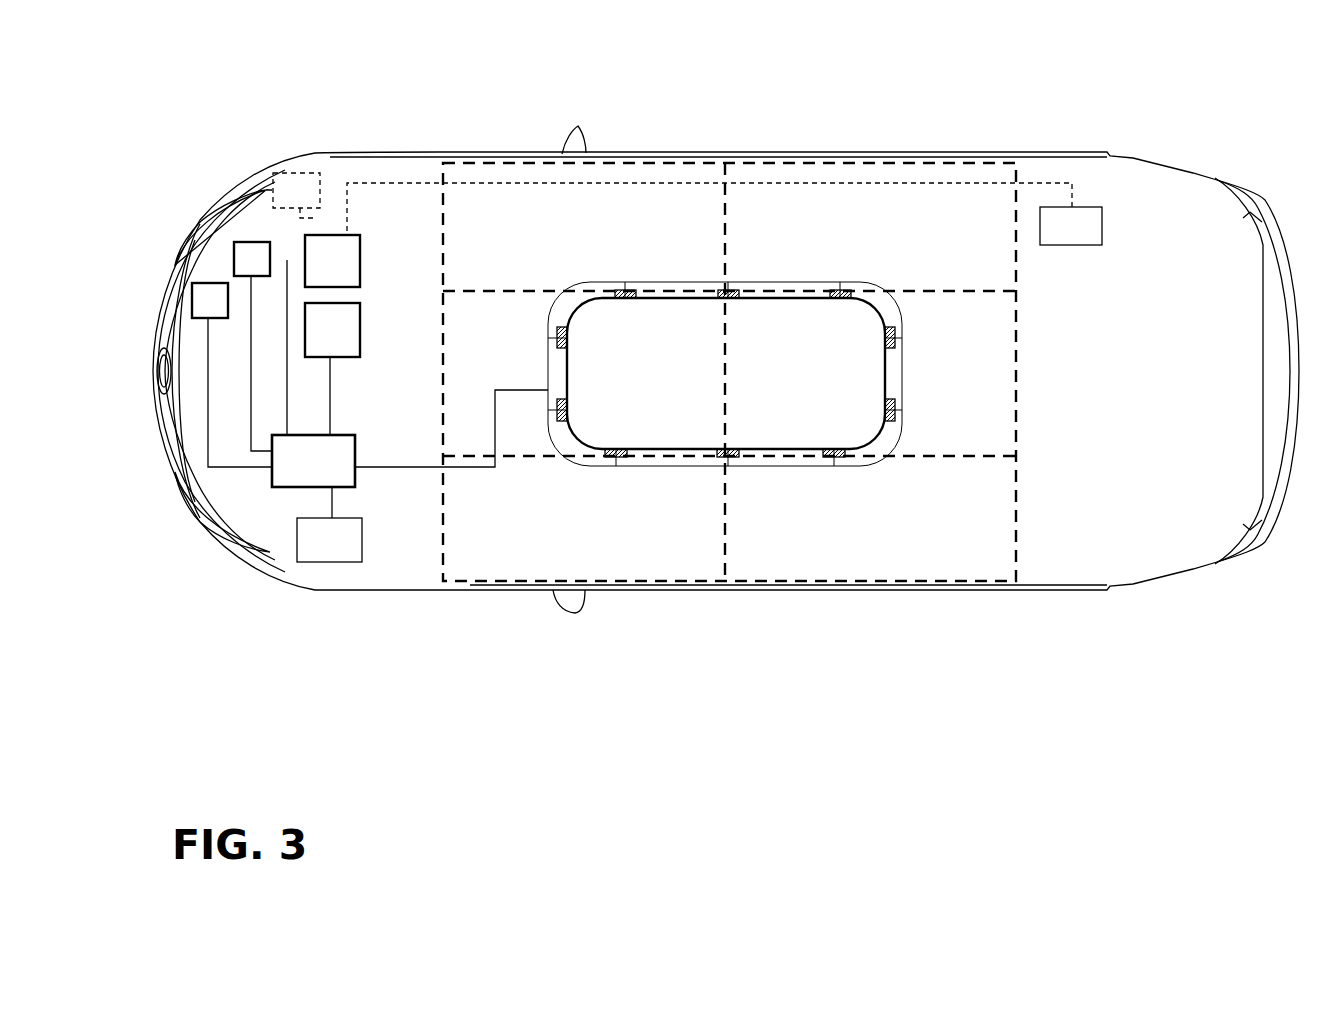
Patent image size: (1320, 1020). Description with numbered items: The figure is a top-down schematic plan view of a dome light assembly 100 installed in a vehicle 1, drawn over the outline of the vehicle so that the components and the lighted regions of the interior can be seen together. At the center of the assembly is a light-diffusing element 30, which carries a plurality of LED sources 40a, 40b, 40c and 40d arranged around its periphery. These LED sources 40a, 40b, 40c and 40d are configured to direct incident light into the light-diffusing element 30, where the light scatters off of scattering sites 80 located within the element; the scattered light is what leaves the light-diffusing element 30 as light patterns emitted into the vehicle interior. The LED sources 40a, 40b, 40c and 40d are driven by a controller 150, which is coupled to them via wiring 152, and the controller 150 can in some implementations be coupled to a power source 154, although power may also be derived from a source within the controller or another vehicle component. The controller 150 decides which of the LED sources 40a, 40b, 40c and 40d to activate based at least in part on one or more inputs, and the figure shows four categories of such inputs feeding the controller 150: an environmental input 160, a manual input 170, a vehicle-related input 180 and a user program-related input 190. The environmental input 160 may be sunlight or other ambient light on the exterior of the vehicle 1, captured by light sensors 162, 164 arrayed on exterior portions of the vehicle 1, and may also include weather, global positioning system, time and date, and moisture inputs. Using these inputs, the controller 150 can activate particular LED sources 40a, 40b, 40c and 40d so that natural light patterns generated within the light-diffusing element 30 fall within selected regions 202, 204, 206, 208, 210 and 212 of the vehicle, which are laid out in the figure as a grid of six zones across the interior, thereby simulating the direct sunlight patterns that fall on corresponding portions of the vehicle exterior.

The vehicle 1 is at (1167, 207).
The light-diffusing element 30 is at (772, 300).
The LED source 40a is at (897, 327).
The LED source 40b is at (714, 457).
The LED source 40c is at (556, 329).
The LED source 40d is at (716, 291).
The scattering sites 80 is at (850, 402).
The dome light assembly 100 is at (629, 115).
The controller 150 is at (328, 477).
The wiring 152 is at (523, 390).
The power source 154 is at (342, 552).
The environmental input 160 is at (328, 252).
The light sensor 162 is at (312, 204).
The light sensor 164 is at (1084, 242).
The manual input 170 is at (241, 242).
The vehicle-related input 180 is at (210, 283).
The user program-related input 190 is at (343, 325).
The region 202 is at (494, 535).
The region 204 is at (494, 353).
The region 206 is at (494, 243).
The region 208 is at (959, 535).
The region 210 is at (959, 353).
The region 212 is at (959, 243).